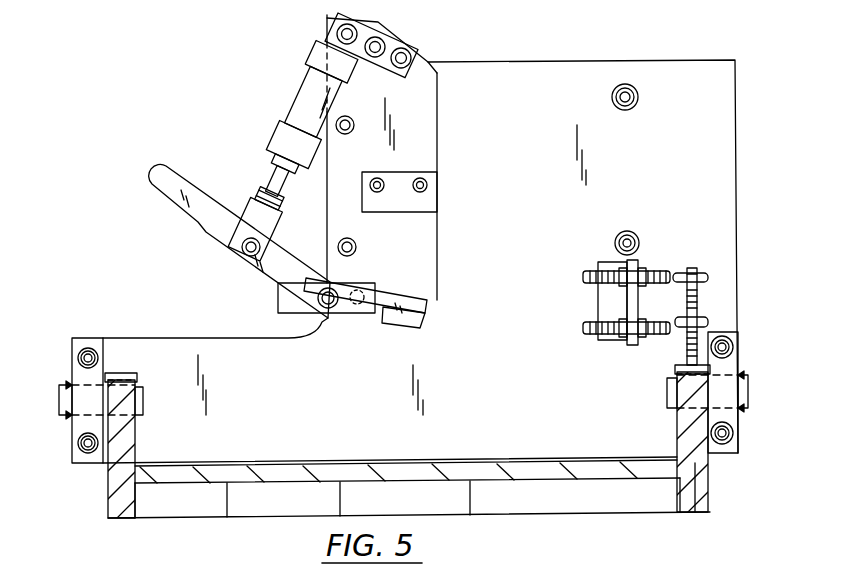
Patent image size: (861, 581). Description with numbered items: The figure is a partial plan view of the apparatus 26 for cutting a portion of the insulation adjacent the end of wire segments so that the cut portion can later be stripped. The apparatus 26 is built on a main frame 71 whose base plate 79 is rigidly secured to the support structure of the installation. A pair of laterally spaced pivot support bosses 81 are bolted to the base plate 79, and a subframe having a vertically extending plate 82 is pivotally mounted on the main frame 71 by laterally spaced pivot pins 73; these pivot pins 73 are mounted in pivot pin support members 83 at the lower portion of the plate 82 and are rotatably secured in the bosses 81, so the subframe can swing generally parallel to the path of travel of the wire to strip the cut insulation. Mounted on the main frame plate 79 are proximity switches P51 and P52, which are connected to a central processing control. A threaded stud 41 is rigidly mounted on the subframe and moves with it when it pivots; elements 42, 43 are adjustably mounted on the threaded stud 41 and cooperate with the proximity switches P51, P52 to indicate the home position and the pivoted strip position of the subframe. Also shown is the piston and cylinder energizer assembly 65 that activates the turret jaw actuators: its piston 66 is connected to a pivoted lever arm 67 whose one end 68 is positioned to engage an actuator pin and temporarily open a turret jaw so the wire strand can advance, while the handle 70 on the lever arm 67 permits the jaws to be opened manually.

The apparatus for cutting a portion of the insulation 26 is at (710, 496).
The threaded stud 41 is at (698, 296).
The sensed element 42 is at (708, 322).
The sensed element 43 is at (708, 278).
The piston and cylinder energizer assembly 65 is at (302, 93).
The piston 66 is at (275, 182).
The pivoted lever arm 67 is at (250, 270).
The end of lever arm 68 is at (432, 297).
The handle 70 is at (150, 183).
The main frame 71 is at (146, 336).
The pivot pins 73 is at (62, 388).
The base plate 79 is at (738, 138).
The pivot support bosses 81 is at (72, 461).
The vertically extending plate 82 is at (582, 460).
The pivot pin support members 83 is at (108, 485).
The proximity switch P51 is at (657, 340).
The proximity switch P52 is at (658, 270).